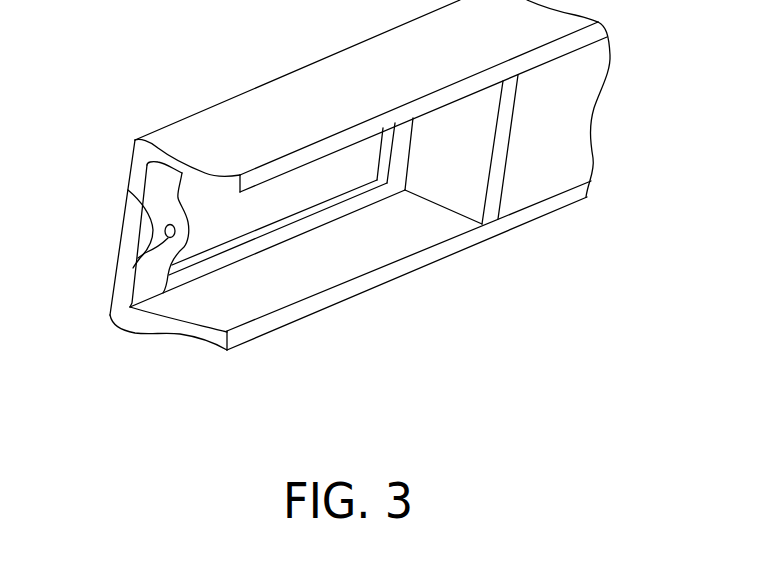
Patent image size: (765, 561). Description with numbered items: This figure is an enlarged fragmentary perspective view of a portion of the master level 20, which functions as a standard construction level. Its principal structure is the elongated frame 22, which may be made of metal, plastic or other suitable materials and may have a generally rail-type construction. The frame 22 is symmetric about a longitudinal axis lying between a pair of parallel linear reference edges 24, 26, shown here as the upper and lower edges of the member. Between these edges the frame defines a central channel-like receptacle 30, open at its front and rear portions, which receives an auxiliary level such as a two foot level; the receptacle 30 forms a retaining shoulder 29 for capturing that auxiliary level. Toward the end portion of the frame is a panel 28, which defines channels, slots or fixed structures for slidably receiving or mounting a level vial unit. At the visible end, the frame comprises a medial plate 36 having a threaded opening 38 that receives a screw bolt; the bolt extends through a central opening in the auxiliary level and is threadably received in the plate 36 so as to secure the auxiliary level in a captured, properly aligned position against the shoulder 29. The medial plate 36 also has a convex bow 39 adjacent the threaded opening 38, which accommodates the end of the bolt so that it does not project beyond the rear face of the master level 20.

The master level 20 is at (455, 282).
The elongated frame 22 is at (572, 38).
The linear reference edge 24 is at (338, 72).
The linear reference edge 26 is at (548, 215).
The panel 28 is at (548, 130).
The retaining shoulder 29 is at (197, 282).
The central channel-like receptacle 30 is at (287, 277).
The medial plate 36 is at (158, 193).
The threaded opening 38 is at (142, 250).
The convex bow 39 is at (147, 219).